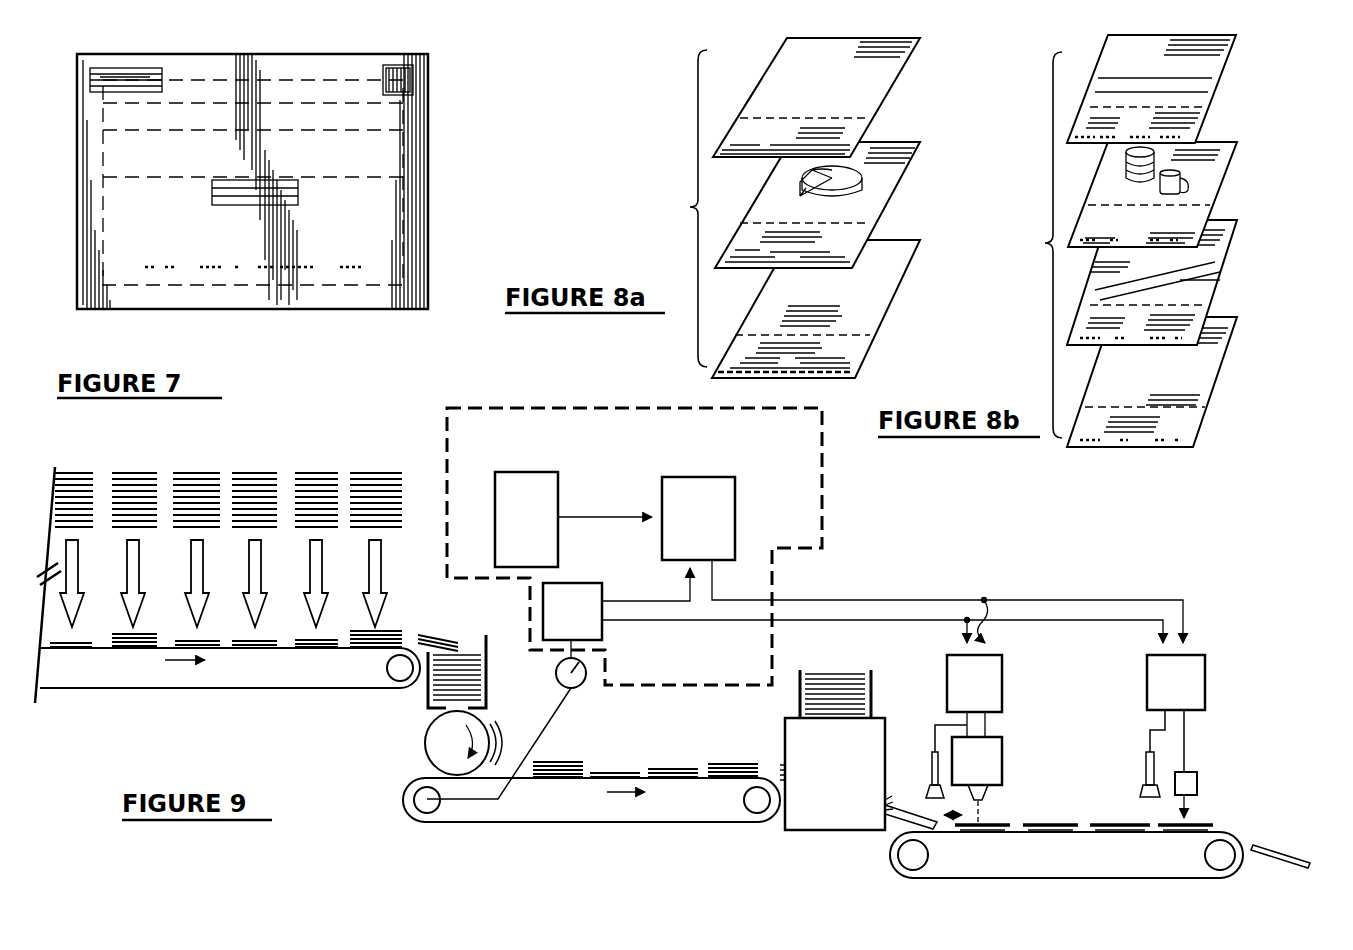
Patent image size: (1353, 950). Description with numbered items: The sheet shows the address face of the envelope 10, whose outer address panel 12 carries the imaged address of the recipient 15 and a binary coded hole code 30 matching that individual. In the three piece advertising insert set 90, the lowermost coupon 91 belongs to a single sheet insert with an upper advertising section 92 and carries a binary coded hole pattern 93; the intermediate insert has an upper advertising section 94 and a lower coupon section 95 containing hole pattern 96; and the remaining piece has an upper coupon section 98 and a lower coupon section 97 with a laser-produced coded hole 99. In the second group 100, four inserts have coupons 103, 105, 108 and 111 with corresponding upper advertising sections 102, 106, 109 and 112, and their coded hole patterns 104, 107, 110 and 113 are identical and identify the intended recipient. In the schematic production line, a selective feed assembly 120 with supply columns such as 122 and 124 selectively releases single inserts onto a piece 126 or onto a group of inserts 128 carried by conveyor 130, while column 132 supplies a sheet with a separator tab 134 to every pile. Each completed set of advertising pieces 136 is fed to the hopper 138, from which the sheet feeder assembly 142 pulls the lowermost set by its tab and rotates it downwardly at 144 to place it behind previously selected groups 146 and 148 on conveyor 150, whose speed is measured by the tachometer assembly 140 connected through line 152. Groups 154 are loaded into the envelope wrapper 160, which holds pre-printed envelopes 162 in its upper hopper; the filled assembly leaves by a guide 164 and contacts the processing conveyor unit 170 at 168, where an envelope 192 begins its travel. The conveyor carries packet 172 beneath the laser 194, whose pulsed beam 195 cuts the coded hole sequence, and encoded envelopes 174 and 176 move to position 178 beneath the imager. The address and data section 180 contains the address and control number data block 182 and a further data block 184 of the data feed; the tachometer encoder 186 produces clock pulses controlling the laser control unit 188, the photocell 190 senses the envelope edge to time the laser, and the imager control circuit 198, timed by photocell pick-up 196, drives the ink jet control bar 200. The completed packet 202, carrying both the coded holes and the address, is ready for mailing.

In FIG. 7, the envelope 10 is at (437, 108).
In FIG. 7, the address panel 12 is at (395, 190).
In FIG. 7, the imaged address of the recipient 15 is at (243, 192).
In FIG. 7, the hole code 30 is at (238, 270).
In FIG. 8A, the insert set 90 is at (805, 201).
In FIG. 8A, the lowermost coupon 91 is at (862, 345).
In FIG. 8A, the upper advertising section 92 is at (888, 285).
In FIG. 8A, the binary coded hole pattern 93 is at (830, 371).
In FIG. 8A, the upper advertising section 94 is at (888, 187).
In FIG. 8A, the lower coupon section 95 is at (862, 227).
In FIG. 8A, the hole pattern 96 is at (832, 260).
In FIG. 8A, the lower coupon section 97 is at (862, 122).
In FIG. 8A, the upper coupon section 98 is at (882, 75).
In FIG. 8A, the laser-produced coded hole 99 is at (832, 147).
In FIG. 8B, the group of advertising inserts 100 is at (1150, 241).
In FIG. 8B, the upper advertising section 102 is at (1213, 350).
In FIG. 8B, the coupon 103 is at (1197, 407).
In FIG. 8B, the coded hole pattern 104 is at (1185, 437).
In FIG. 8B, the coupon 105 is at (1195, 298).
In FIG. 8B, the upper advertising section 106 is at (1218, 258).
In FIG. 8B, the coded hole pattern 107 is at (1182, 333).
In FIG. 8B, the coupon 108 is at (1195, 202).
In FIG. 8B, the upper advertising section 109 is at (1220, 172).
In FIG. 8B, the coded hole pattern 110 is at (1182, 231).
In FIG. 8B, the coupon 111 is at (1195, 112).
In FIG. 8B, the upper advertising section 112 is at (1208, 68).
In FIG. 8B, the coded hole pattern 113 is at (1178, 137).
In FIG. 9, the selective feed assembly 120 is at (230, 470).
In FIG. 9, the supply column 122 is at (72, 474).
In FIG. 9, the supply column 124 is at (135, 473).
In FIG. 9, the piece 126 is at (66, 644).
In FIG. 9, the group of inserts 128 is at (122, 636).
In FIG. 9, the conveyor 130 is at (247, 642).
In FIG. 9, the column 132 is at (375, 473).
In FIG. 9, the separator tab sheet 134 is at (388, 632).
In FIG. 9, the completed set of advertising pieces 136 is at (447, 637).
In FIG. 9, the hopper 138 is at (490, 685).
In FIG. 9, the tachometer assembly 140 is at (552, 688).
In FIG. 9, the sheet feeder assembly 142 is at (428, 745).
In FIG. 9, the rotated position 144 is at (490, 754).
In FIG. 9, the group of advertising inserts 146 is at (562, 758).
In FIG. 9, the group of advertising inserts 148 is at (613, 772).
In FIG. 9, the conveyor 150 is at (655, 823).
In FIG. 9, the line 152 is at (462, 802).
In FIG. 9, the groups of advertising inserts 154 is at (723, 770).
In FIG. 9, the envelope wrapper assembly 160 is at (855, 787).
In FIG. 9, the pre-printed envelopes 162 is at (838, 668).
In FIG. 9, the guide 164 is at (898, 806).
In FIG. 9, the envelope at contact point 168 is at (937, 835).
In FIG. 9, the processing conveyor unit 170 is at (1094, 878).
In FIG. 9, the packet 172 is at (1000, 830).
In FIG. 9, the encoded envelope 174 is at (1058, 830).
In FIG. 9, the encoded envelope 176 is at (1118, 830).
In FIG. 9, the imaging position 178 is at (1205, 826).
In FIG. 9, the address and data section 180 is at (440, 430).
In FIG. 9, the address and control number data block 182 is at (545, 530).
In FIG. 9, the data processor 184 is at (717, 530).
In FIG. 9, the tachometer encoder 186 is at (592, 622).
In FIG. 9, the laser control unit 188 is at (994, 694).
In FIG. 9, the photocell 190 is at (932, 760).
In FIG. 9, the envelope 192 is at (953, 832).
In FIG. 9, the laser 194 is at (997, 774).
In FIG. 9, the pulsed beam 195 is at (985, 812).
In FIG. 9, the photocell pick-up 196 is at (1143, 775).
In FIG. 9, the imager control circuit 198 is at (1196, 694).
In FIG. 9, the ink jet control bar 200 is at (1195, 772).
In FIG. 9, the completed packet 202 is at (1281, 866).